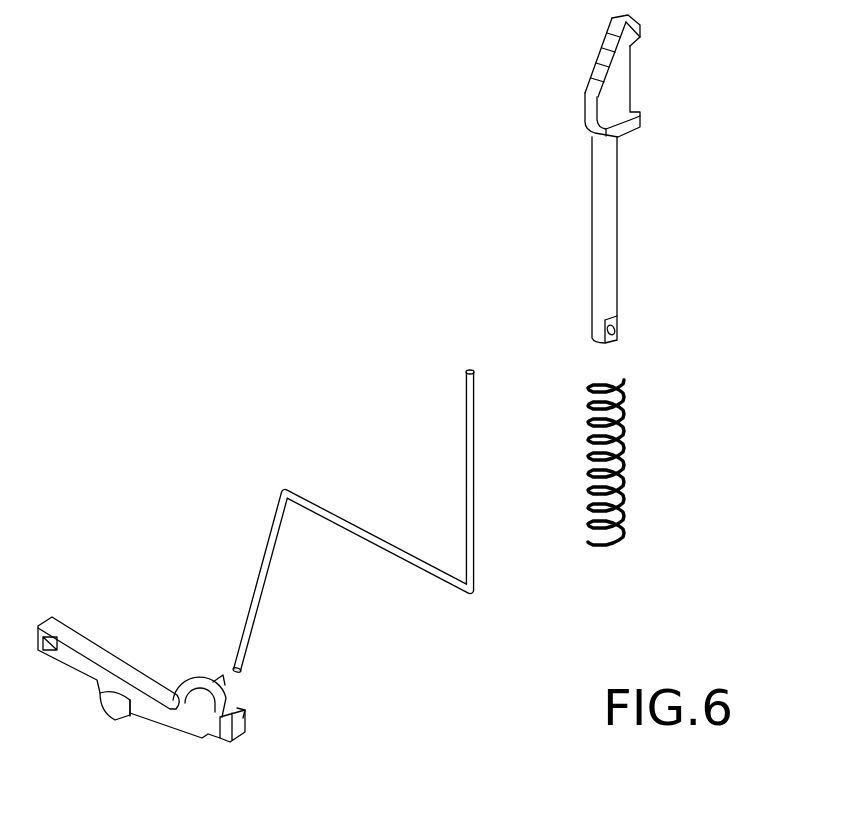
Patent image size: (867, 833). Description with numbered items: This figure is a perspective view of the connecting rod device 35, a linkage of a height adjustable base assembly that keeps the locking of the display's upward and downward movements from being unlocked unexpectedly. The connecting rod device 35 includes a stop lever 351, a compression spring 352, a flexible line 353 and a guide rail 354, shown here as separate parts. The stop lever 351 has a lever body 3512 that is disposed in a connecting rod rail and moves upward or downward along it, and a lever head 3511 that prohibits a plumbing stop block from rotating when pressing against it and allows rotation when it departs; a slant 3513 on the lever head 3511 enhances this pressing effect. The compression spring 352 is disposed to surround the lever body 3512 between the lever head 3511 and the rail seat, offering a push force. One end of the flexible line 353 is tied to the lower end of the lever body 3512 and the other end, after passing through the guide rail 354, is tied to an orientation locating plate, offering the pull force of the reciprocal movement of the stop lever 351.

The connecting rod device 35 is at (515, 708).
The stop lever 351 is at (517, 188).
The lever head 3511 is at (590, 114).
The lever body 3512 is at (617, 277).
The slant 3513 is at (602, 43).
The compression spring 352 is at (593, 373).
The flexible line 353 is at (325, 505).
The guide rail 354 is at (82, 623).